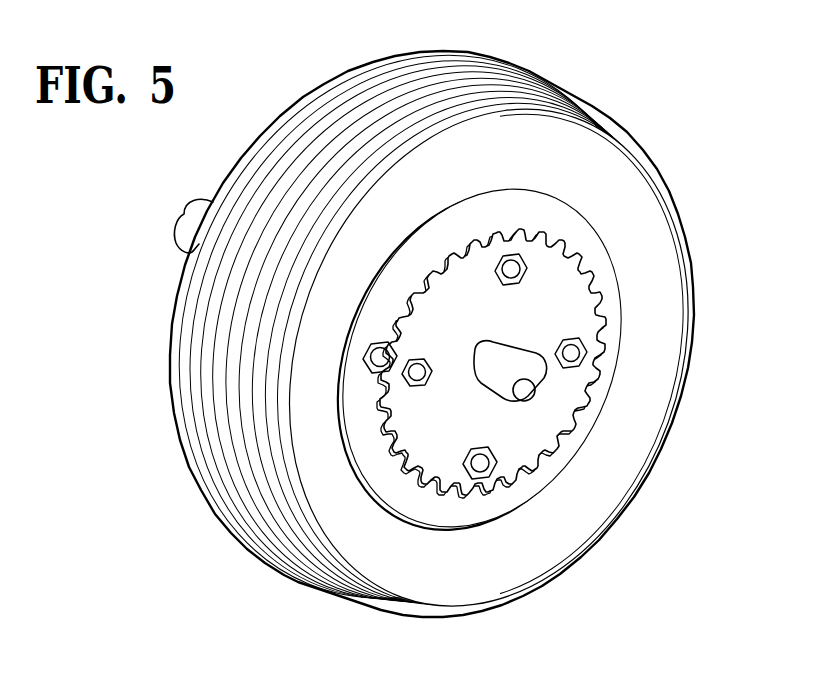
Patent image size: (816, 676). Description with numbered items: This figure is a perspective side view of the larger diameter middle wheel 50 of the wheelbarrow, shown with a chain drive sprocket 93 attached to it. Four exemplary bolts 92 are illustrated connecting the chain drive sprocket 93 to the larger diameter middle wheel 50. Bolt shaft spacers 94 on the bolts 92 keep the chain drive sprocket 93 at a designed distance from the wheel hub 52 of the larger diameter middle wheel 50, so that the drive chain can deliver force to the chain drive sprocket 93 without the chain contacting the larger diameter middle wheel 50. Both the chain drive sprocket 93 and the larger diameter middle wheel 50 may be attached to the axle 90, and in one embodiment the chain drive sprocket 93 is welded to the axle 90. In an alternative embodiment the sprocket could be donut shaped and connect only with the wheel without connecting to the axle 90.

The larger diameter middle wheel 50 is at (608, 170).
The wheel hub 52 is at (608, 353).
The axle 90 is at (513, 358).
The bolts 92 is at (583, 358).
The chain drive sprocket 93 is at (530, 433).
The bolt shaft spacers 94 is at (478, 235).